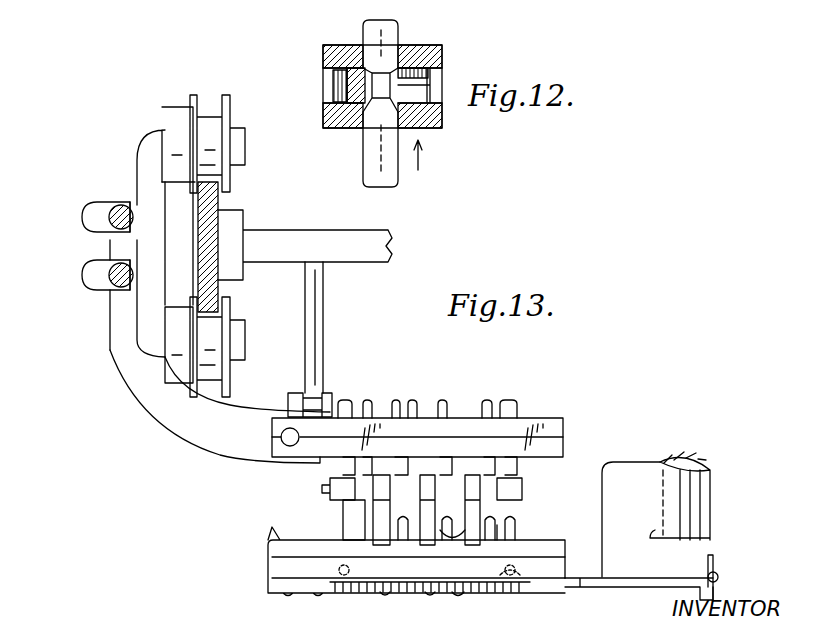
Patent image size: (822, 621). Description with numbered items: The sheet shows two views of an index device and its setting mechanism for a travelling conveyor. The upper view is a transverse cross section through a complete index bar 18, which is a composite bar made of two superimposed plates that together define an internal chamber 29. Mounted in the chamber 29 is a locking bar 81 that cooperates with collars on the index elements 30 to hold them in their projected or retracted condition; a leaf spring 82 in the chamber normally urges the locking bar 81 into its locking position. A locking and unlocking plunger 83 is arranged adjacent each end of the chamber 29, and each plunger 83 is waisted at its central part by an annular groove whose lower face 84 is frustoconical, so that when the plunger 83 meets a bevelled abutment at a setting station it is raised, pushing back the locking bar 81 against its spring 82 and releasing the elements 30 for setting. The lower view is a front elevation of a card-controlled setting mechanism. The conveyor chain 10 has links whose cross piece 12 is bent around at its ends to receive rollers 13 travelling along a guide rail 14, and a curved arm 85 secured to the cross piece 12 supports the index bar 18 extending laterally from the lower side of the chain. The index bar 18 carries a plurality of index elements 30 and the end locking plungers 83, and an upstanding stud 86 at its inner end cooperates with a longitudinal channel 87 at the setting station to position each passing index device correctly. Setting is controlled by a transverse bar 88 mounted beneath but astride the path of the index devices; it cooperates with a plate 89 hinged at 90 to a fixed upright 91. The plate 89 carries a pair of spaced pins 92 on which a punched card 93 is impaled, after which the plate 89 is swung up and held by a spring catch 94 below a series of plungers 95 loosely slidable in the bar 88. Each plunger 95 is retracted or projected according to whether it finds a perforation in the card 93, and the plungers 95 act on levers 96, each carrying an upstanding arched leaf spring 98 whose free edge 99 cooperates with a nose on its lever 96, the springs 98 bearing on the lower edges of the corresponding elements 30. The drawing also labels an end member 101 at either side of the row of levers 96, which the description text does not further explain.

In FIG. 13, the conveyor chain 10 is at (151, 112).
In FIG. 13, the cross piece 12 is at (143, 162).
In FIG. 13, the rollers 13 is at (230, 114).
In FIG. 13, the guide rail 14 is at (205, 208).
In FIG. 12, the index bar 18 is at (330, 46).
In FIG. 13, the index bar 18 is at (548, 446).
In FIG. 12, the chamber 29 is at (430, 130).
In FIG. 13, the index elements 30 is at (413, 402).
In FIG. 12, the locking bar 81 is at (345, 94).
In FIG. 12, the leaf spring 82 is at (331, 83).
In FIG. 12, the locking plungers 83 is at (381, 170).
In FIG. 13, the locking plungers 83 is at (353, 406).
In FIG. 12, the lower face 84 is at (378, 108).
In FIG. 13, the curved arm 85 is at (150, 420).
In FIG. 13, the upstanding stud 86 is at (293, 398).
In FIG. 13, the longitudinal channel 87 is at (323, 396).
In FIG. 13, the transverse bar 88 is at (540, 545).
In FIG. 13, the plate 89 is at (594, 586).
In FIG. 13, the hinge 90 is at (719, 578).
In FIG. 13, the fixed upright 91 is at (700, 522).
In FIG. 13, the spaced pins 92 is at (345, 576).
In FIG. 13, the punched card 93 is at (516, 580).
In FIG. 13, the spring catch 94 is at (270, 553).
In FIG. 13, the plungers 95 is at (446, 534).
In FIG. 13, the levers 96 is at (385, 525).
In FIG. 13, the arched leaf spring 98 is at (383, 500).
In FIG. 13, the free edge 99 is at (533, 494).
In FIG. 13, the end blocks 101 is at (334, 486).